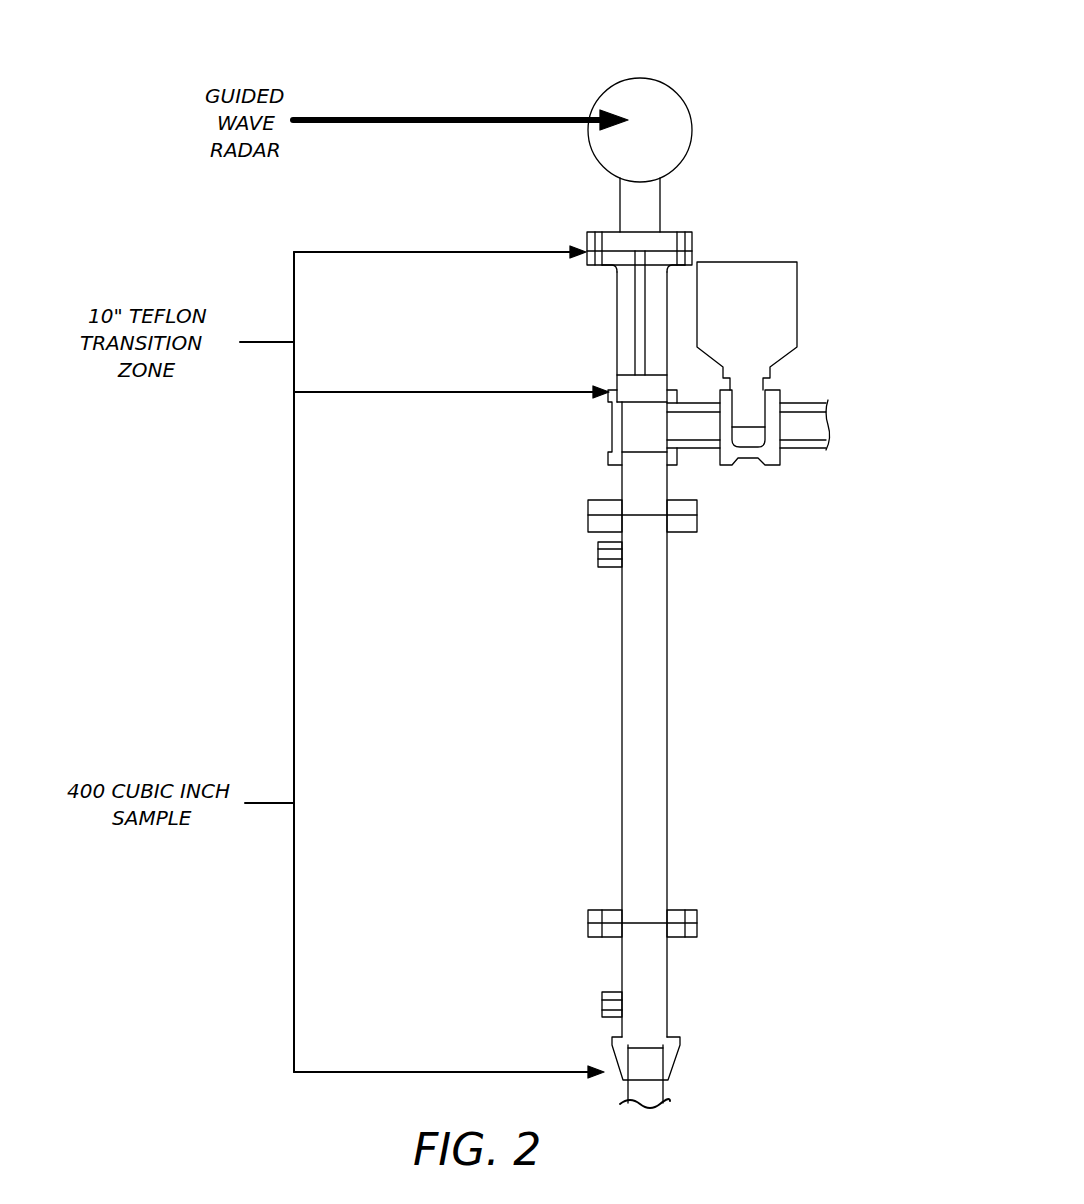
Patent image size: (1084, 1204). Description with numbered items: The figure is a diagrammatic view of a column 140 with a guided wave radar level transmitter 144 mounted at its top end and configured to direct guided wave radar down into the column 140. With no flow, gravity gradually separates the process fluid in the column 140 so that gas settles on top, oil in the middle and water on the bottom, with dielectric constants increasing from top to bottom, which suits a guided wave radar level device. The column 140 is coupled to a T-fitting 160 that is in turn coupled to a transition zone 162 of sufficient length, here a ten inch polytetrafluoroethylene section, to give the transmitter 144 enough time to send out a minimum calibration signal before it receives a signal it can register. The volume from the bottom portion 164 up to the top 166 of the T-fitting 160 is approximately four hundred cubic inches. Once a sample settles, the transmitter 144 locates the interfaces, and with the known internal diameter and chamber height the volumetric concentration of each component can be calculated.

The column 140 is at (722, 620).
The guided wave radar level transmitter 144 is at (628, 80).
The T-fitting 160 is at (612, 432).
The transition zone 162 is at (613, 295).
The bottom portion 164 is at (517, 1070).
The top of T 166 is at (317, 393).